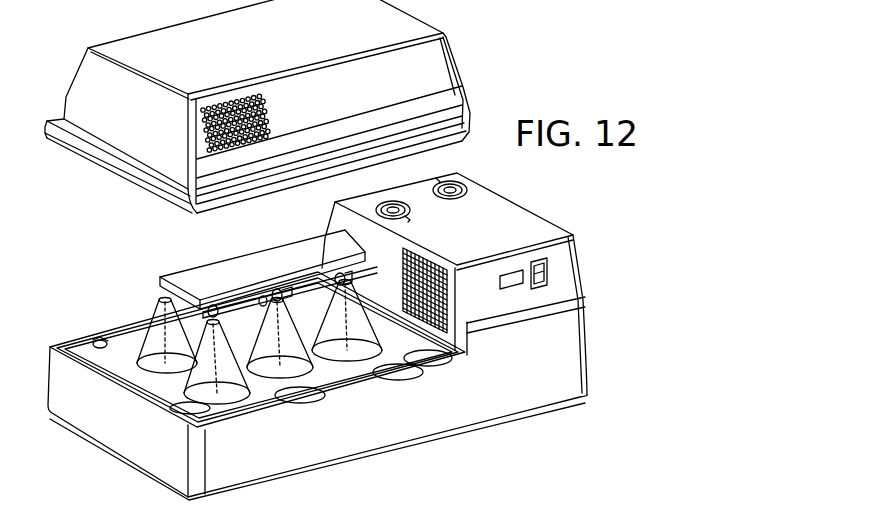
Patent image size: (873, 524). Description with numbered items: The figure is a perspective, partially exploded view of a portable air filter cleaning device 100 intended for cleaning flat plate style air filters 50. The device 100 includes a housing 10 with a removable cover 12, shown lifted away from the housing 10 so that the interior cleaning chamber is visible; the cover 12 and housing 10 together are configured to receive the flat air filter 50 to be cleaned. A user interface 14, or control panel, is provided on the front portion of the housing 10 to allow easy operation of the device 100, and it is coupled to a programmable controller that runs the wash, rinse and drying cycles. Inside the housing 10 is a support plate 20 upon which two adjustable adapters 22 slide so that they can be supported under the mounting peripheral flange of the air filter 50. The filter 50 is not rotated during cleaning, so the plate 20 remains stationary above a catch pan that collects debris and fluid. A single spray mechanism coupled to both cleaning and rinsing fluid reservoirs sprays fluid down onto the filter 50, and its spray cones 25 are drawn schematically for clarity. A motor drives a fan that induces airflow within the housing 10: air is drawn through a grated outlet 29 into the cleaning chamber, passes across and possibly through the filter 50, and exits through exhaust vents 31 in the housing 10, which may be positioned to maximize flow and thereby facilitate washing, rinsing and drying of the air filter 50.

The housing 10 is at (565, 383).
The removable cover 12 is at (352, 39).
The user interface 14 is at (549, 277).
The support plate 20 is at (96, 343).
The adjustable adapters 22 is at (187, 414).
The spray cones 25 is at (152, 305).
The grated outlet 29 is at (432, 360).
The exhaust vents 31 is at (257, 143).
The air filter 50 is at (270, 392).
The portable air filter cleaning device 100 is at (621, 289).